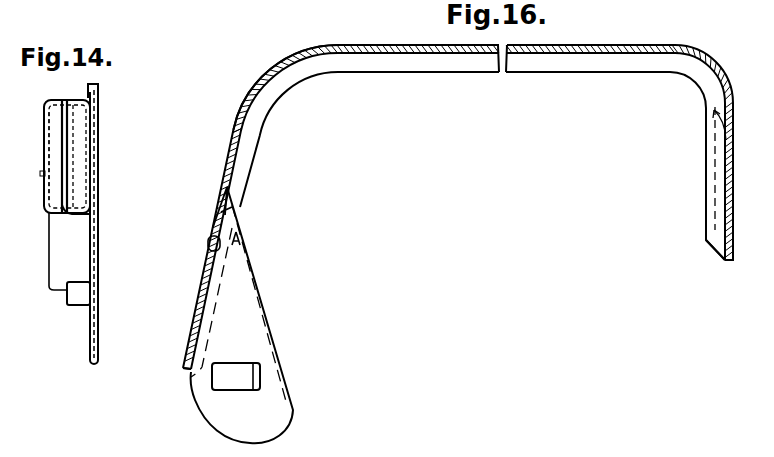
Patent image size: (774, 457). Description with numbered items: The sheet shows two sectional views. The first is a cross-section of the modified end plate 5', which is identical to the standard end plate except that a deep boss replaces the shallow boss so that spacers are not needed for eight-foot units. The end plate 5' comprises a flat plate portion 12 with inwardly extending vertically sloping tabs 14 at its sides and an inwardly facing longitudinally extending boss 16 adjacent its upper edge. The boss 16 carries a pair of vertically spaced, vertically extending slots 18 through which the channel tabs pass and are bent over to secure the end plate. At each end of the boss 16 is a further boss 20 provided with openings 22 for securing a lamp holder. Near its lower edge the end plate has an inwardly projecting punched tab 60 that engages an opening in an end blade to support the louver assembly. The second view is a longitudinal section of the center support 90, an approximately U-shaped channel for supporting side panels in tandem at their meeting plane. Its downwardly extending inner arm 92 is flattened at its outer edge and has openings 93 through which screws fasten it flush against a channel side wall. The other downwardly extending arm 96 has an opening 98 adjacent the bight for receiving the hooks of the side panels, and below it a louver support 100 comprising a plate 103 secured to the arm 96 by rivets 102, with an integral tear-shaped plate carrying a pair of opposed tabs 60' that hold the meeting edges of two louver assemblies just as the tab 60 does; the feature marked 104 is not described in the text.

In FIG. 14, the flat plate portion 12 is at (99, 337).
In FIG. 14, the end plate 5' is at (106, 177).
In FIG. 14, the inwardly extending vertically sloping tabs 14 is at (50, 253).
In FIG. 14, the boss 16 is at (64, 197).
In FIG. 14, the slots 18 is at (66, 153).
In FIG. 14, the shallow boss 20 is at (45, 177).
In FIG. 14, the openings 22 is at (47, 147).
In FIG. 14, the tab 60 is at (68, 304).
In FIG. 16, the center support 90 is at (530, 121).
In FIG. 16, the inner arm 92 is at (725, 201).
In FIG. 16, the openings 93 is at (710, 164).
In FIG. 16, the arm 96 is at (180, 355).
In FIG. 16, the opening 98 is at (256, 95).
In FIG. 16, the louver support 100 is at (262, 293).
In FIG. 16, the rivets 102 is at (233, 239).
In FIG. 16, the plate 103 is at (238, 210).
In FIG. 16, the curl 104 is at (707, 155).
In FIG. 16, the tabs 60' is at (239, 365).